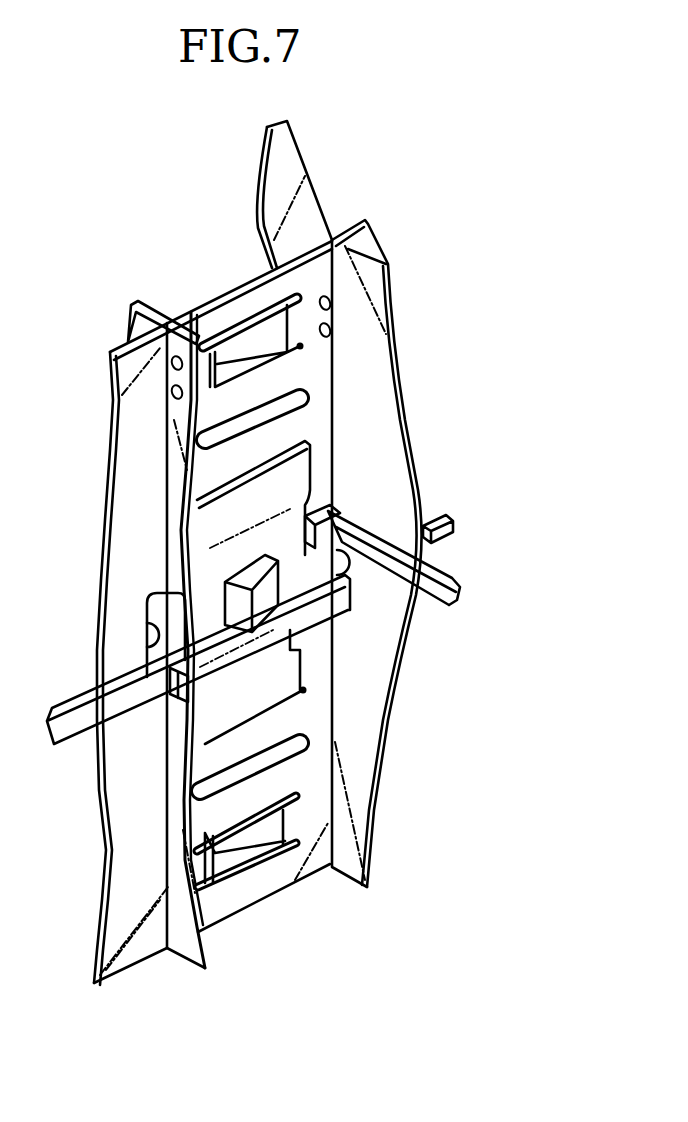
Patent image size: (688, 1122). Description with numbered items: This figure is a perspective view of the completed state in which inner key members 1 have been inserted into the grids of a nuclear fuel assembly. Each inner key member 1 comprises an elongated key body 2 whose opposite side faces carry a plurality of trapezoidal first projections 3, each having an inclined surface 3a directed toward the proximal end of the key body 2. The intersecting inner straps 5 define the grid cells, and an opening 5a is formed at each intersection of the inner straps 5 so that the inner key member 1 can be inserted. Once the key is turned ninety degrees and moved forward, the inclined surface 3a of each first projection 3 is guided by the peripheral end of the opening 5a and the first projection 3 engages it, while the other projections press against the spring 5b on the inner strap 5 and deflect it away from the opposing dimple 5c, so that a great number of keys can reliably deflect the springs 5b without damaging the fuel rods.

The inner key member 1 is at (436, 507).
The key body 2 is at (406, 578).
The first projection 3 is at (320, 512).
The inclined surface 3a is at (228, 645).
The inner strap 5 is at (150, 333).
The opening 5a is at (236, 347).
The spring 5b is at (270, 650).
The dimple 5c is at (243, 830).